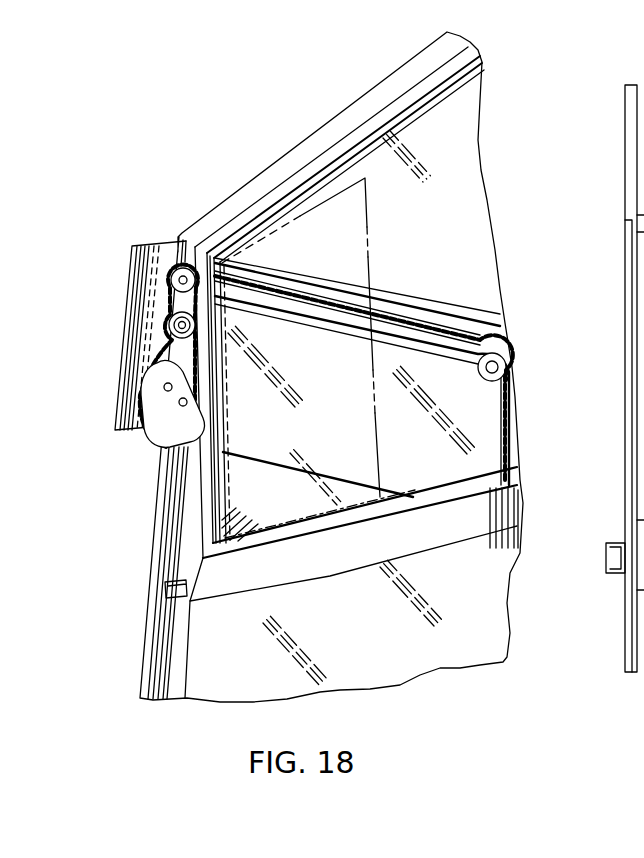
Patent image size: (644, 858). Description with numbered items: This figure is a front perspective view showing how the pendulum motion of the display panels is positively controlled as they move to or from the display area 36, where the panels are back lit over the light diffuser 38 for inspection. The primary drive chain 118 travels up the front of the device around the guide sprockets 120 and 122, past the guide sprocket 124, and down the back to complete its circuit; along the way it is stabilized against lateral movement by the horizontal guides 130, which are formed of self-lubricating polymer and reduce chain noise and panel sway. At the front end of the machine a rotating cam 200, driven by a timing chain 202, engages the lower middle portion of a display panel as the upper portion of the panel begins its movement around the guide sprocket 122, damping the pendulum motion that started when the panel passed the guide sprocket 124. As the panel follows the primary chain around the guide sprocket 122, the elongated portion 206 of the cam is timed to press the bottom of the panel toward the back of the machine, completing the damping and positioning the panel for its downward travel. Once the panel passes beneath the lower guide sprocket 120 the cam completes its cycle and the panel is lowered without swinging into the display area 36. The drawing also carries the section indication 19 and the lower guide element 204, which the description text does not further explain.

The display area 36 is at (423, 657).
The light diffuser 38 is at (333, 573).
The primary drive chain 118 is at (512, 456).
The lower guide sprocket 120 is at (171, 316).
The guide sprocket 122 is at (172, 269).
The guide sprocket 124 is at (500, 370).
The horizontal guide 130 is at (440, 352).
The rotating cam 200 is at (137, 432).
The timing chain 202 is at (152, 352).
The lower window channel 204 is at (233, 547).
The elongated portion of the cam 206 is at (220, 438).
The section line 19- 19 is at (142, 225).